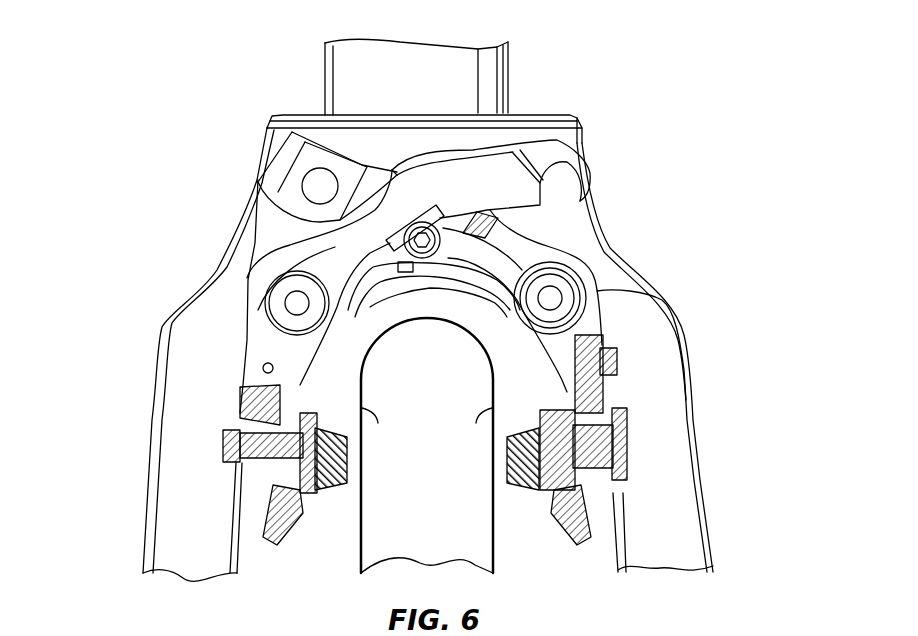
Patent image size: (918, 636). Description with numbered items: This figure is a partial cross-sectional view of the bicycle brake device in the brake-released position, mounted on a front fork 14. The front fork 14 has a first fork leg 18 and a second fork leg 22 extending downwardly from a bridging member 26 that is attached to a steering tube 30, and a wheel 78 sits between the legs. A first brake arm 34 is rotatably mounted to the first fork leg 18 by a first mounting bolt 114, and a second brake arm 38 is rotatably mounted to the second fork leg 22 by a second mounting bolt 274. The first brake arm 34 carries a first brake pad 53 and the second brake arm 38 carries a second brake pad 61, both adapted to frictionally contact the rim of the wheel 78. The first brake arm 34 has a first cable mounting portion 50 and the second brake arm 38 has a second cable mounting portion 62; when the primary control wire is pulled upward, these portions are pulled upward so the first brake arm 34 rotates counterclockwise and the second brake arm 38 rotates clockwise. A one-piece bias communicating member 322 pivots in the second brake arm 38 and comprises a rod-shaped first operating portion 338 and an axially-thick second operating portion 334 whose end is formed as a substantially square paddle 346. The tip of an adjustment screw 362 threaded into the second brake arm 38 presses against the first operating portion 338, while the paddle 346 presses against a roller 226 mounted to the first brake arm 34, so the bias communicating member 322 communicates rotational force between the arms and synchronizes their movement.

The front fork 14 is at (406, 310).
The first fork leg 18 is at (150, 420).
The second fork leg 22 is at (698, 432).
The bridging member 26 is at (272, 116).
The steering tube 30 is at (485, 73).
The first brake arm 34 is at (237, 344).
The second brake arm 38 is at (597, 272).
The first cable mounting portion 50 is at (597, 142).
The first brake pad 53 is at (310, 527).
The second brake pad 61 is at (552, 530).
The second cable mounting portion 62 is at (253, 160).
The wheel 78 is at (439, 515).
The first mounting bolt 114 is at (297, 303).
The roller 226 is at (447, 230).
The second mounting bolt 274 is at (550, 298).
The bias communicating member 322 is at (503, 328).
The second operating portion 334 is at (458, 277).
The first operating portion 338 is at (560, 367).
The paddle 346 is at (410, 272).
The adjustment screw 362 is at (600, 367).